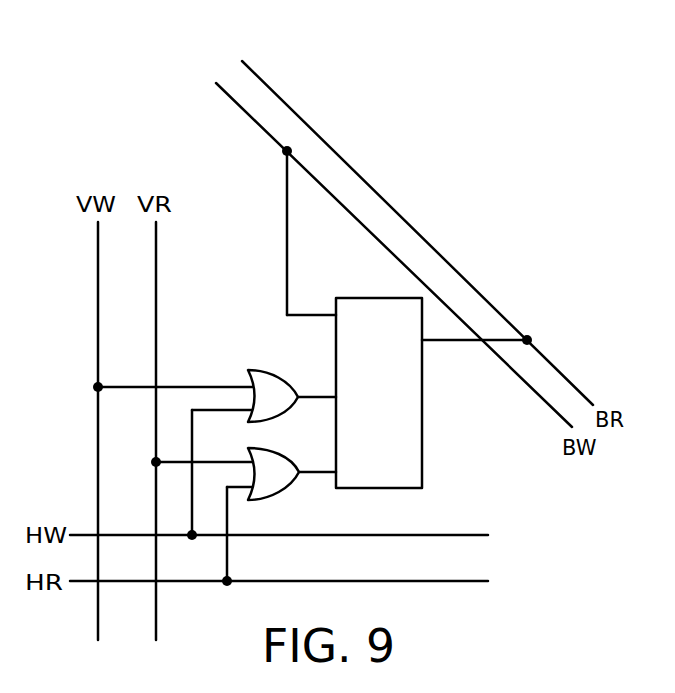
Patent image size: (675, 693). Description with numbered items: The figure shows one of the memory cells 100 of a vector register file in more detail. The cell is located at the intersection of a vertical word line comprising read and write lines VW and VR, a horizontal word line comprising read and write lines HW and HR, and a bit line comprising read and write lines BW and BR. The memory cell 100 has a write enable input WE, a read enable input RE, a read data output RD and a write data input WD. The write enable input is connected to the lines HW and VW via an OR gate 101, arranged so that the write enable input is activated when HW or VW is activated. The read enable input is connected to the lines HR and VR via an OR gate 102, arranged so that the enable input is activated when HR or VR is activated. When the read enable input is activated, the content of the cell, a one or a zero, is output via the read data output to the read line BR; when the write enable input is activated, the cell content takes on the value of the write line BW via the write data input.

The memory cell 100 is at (422, 432).
The OR gate 101 is at (252, 370).
The OR gate 102 is at (298, 487).